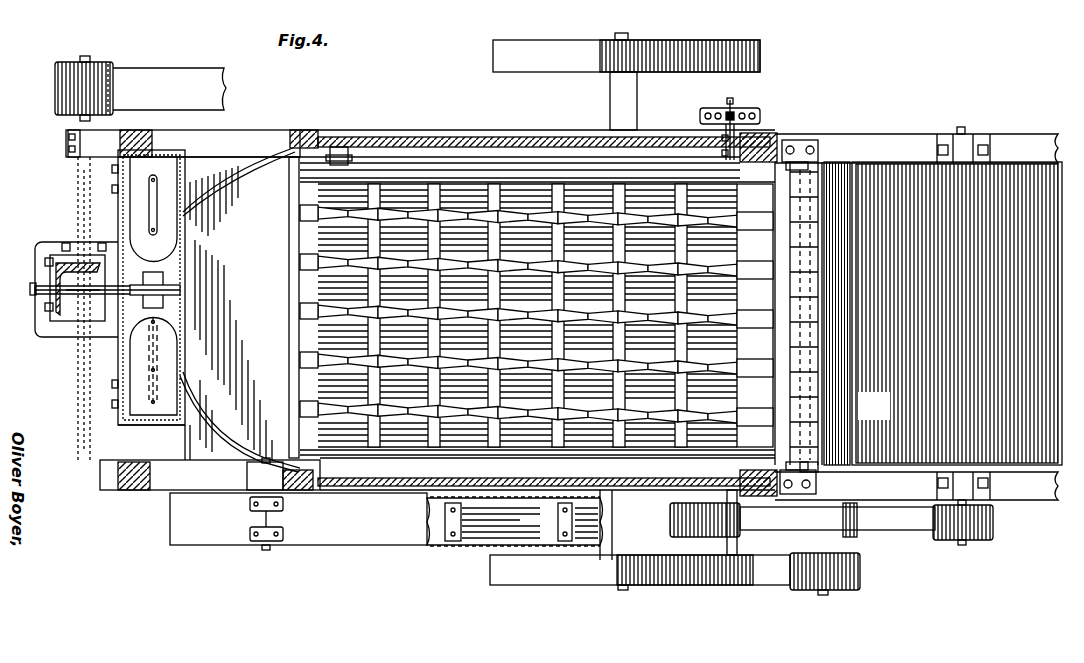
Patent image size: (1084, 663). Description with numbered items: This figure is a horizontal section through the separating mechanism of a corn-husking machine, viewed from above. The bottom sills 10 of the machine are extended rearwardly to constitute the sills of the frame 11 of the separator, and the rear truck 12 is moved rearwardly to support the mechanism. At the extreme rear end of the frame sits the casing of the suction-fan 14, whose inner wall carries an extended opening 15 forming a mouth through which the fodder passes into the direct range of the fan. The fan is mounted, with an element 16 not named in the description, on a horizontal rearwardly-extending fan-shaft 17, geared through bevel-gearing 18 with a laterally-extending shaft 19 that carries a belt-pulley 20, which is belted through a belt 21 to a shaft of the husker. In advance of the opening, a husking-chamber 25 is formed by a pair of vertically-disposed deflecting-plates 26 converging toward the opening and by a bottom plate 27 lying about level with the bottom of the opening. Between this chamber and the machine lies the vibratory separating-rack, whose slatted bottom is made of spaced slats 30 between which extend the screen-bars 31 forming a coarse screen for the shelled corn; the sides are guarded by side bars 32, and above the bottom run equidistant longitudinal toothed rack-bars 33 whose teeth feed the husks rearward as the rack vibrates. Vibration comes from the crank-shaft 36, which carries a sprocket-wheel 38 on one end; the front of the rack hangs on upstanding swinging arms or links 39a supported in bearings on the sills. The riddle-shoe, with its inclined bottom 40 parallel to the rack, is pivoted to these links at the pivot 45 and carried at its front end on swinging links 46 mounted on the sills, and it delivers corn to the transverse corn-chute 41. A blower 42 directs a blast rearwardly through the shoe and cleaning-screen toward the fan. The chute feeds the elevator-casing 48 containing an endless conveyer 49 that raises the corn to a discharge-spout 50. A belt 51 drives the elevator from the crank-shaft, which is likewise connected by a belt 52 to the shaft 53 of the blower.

The bottom sills 10 is at (1032, 146).
The frame 11 is at (245, 122).
The rear truck 12 is at (626, 81).
The suction-fan 14 is at (118, 352).
The opening 15 is at (180, 290).
The chamber 16 is at (130, 212).
The fan-shaft 17 is at (86, 290).
The bevel-gearing 18 is at (48, 262).
The laterally-extending shaft 19 is at (78, 184).
The belt-pulley 20 is at (100, 62).
The belt 21 is at (169, 89).
The husking-chamber 25 is at (232, 318).
The deflecting-plates 26 is at (222, 190).
The bottom plate 27 is at (245, 424).
The slats 30 is at (502, 182).
The screen-bars 31 is at (588, 182).
The side bars 32 is at (405, 170).
The toothed rack-bars 33 is at (466, 180).
The crank-shaft 36 is at (728, 108).
The sprocket-wheel 38 is at (752, 110).
The swinging arms or links 39a is at (352, 137).
The inclined bottom 40 is at (812, 222).
The corn-chute 41 is at (837, 313).
The blower 42 is at (957, 313).
The pivot 45 is at (340, 147).
The swinging links 46 is at (808, 140).
The elevator-casing 48 is at (432, 548).
The endless conveyer 49 is at (521, 522).
The discharge-spout 50 is at (170, 518).
The belt 51 is at (778, 573).
The belt 52 is at (904, 520).
The shaft 53 is at (958, 540).